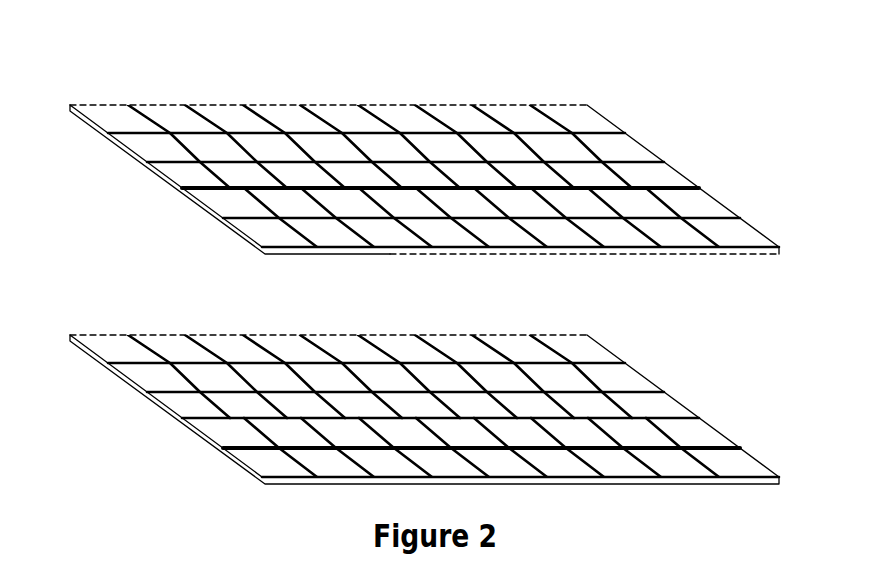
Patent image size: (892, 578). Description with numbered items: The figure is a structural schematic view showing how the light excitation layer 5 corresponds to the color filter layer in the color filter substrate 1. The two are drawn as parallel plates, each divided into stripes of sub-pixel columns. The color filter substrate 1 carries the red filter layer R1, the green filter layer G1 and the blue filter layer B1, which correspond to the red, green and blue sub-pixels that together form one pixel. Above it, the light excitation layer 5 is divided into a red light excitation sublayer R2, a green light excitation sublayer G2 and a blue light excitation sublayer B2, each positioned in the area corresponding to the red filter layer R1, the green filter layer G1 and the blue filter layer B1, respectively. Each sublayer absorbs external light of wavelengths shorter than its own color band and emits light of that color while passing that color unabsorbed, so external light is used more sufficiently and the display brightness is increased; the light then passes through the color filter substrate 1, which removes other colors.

The light excitation layer 5 is at (431, 155).
The color filter substrate 1 is at (430, 382).
The red light excitation sublayer R2 is at (112, 117).
The green light excitation sublayer G2 is at (173, 118).
The blue light excitation sublayer B2 is at (233, 118).
The red filter layer R1 is at (108, 345).
The green filter layer G1 is at (170, 347).
The blue filter layer B1 is at (235, 347).